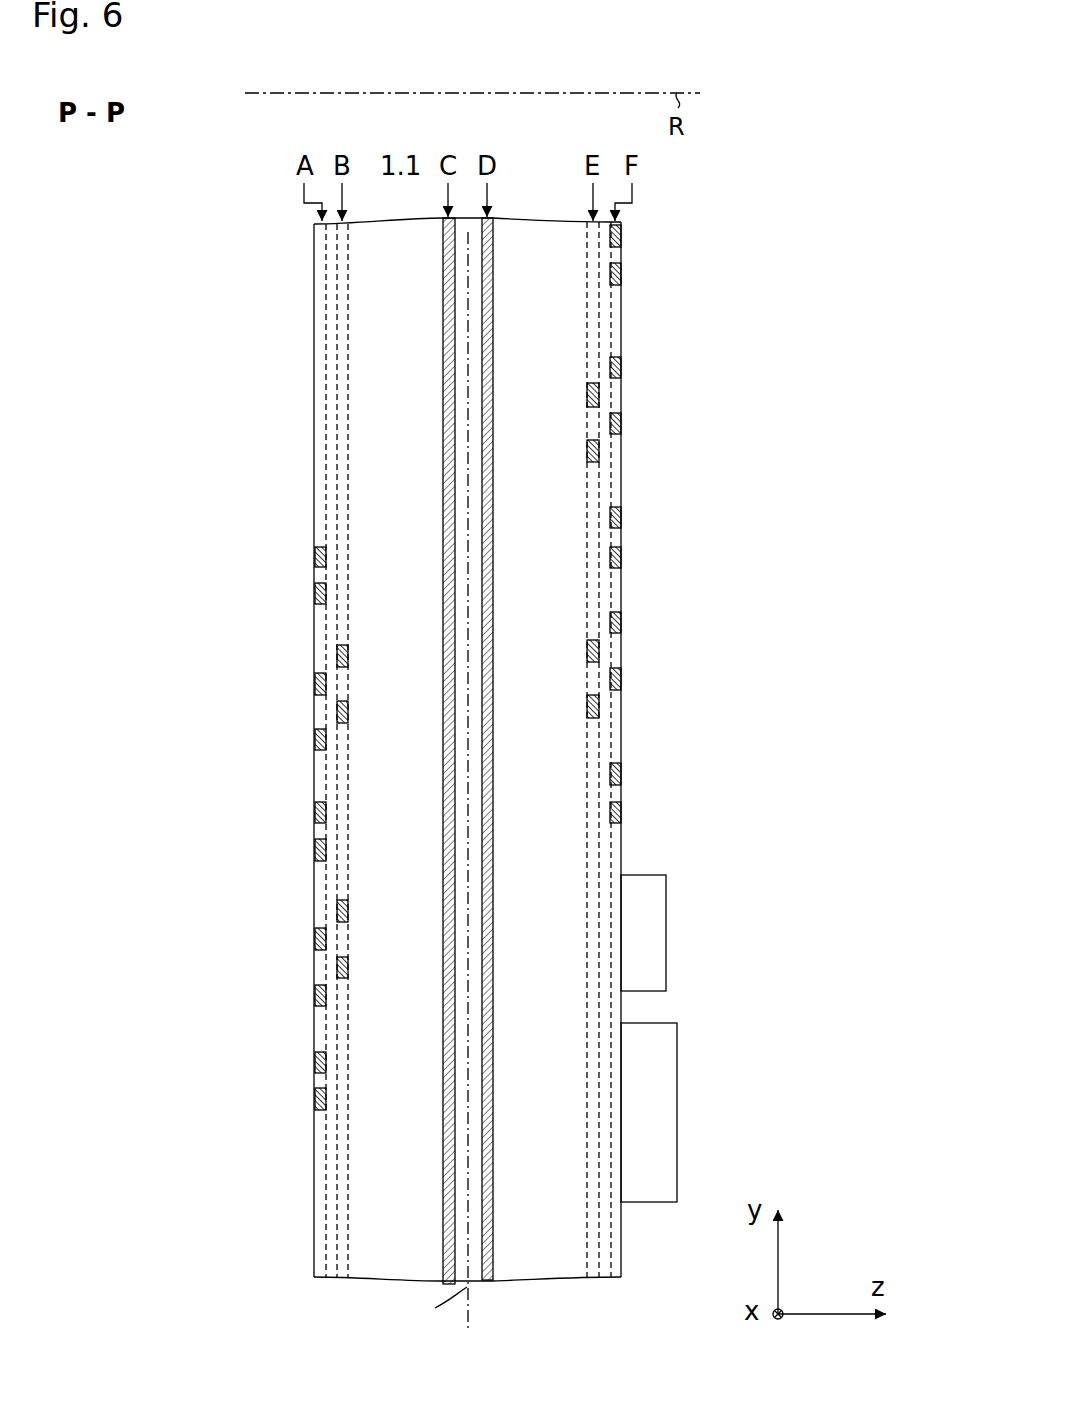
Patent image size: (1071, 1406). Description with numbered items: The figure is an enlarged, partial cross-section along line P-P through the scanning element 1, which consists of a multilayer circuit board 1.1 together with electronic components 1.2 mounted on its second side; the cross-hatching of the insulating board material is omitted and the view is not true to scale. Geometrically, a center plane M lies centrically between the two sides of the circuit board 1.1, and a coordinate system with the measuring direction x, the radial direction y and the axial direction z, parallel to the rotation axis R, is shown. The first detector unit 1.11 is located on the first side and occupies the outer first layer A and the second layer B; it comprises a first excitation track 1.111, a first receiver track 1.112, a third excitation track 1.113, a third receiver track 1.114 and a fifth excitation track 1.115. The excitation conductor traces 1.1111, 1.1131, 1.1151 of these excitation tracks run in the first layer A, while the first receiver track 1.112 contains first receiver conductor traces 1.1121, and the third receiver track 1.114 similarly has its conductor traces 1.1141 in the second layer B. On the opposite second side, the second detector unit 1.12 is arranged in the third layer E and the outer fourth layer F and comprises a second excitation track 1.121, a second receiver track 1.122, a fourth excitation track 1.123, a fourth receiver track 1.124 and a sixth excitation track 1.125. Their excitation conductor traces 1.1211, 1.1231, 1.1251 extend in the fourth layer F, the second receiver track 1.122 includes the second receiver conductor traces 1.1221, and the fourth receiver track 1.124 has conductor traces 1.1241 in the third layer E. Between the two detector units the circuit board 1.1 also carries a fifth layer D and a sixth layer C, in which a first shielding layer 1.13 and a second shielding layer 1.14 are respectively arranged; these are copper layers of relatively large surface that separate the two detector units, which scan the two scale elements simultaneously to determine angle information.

The scanning element 1 is at (280, 431).
The circuit board 1.1 is at (388, 232).
The first detector unit 1.11 is at (226, 554).
The first excitation track 1.111 is at (316, 547).
The first receiver track 1.112 is at (316, 645).
The third excitation track 1.113 is at (316, 802).
The third receiver track 1.114 is at (316, 900).
The fifth excitation track 1.115 is at (316, 1052).
The excitation conductor traces 1.1111 is at (326, 555).
The first receiver conductor traces 1.1121 is at (370, 707).
The excitation conductor traces 1.1131 is at (326, 810).
The electrode 1.1141 is at (370, 962).
The excitation conductor traces 1.1151 is at (326, 1060).
The second detector unit 1.12 is at (722, 225).
The second excitation track 1.121 is at (626, 763).
The second receiver track 1.122 is at (626, 612).
The fourth excitation track 1.123 is at (626, 507).
The fourth receiver track 1.124 is at (626, 357).
The sixth excitation track 1.125 is at (626, 225).
The excitation conductor traces 1.1211 is at (610, 778).
The second receiver conductor traces 1.1221 is at (587, 648).
The excitation conductor traces 1.1231 is at (610, 518).
The electrode 1.1241 is at (587, 392).
The excitation conductor traces 1.1251 is at (610, 278).
The first shielding layer 1.13 is at (493, 1232).
The second shielding layer 1.14 is at (443, 1228).
The electronic components 1.2 is at (649, 1038).